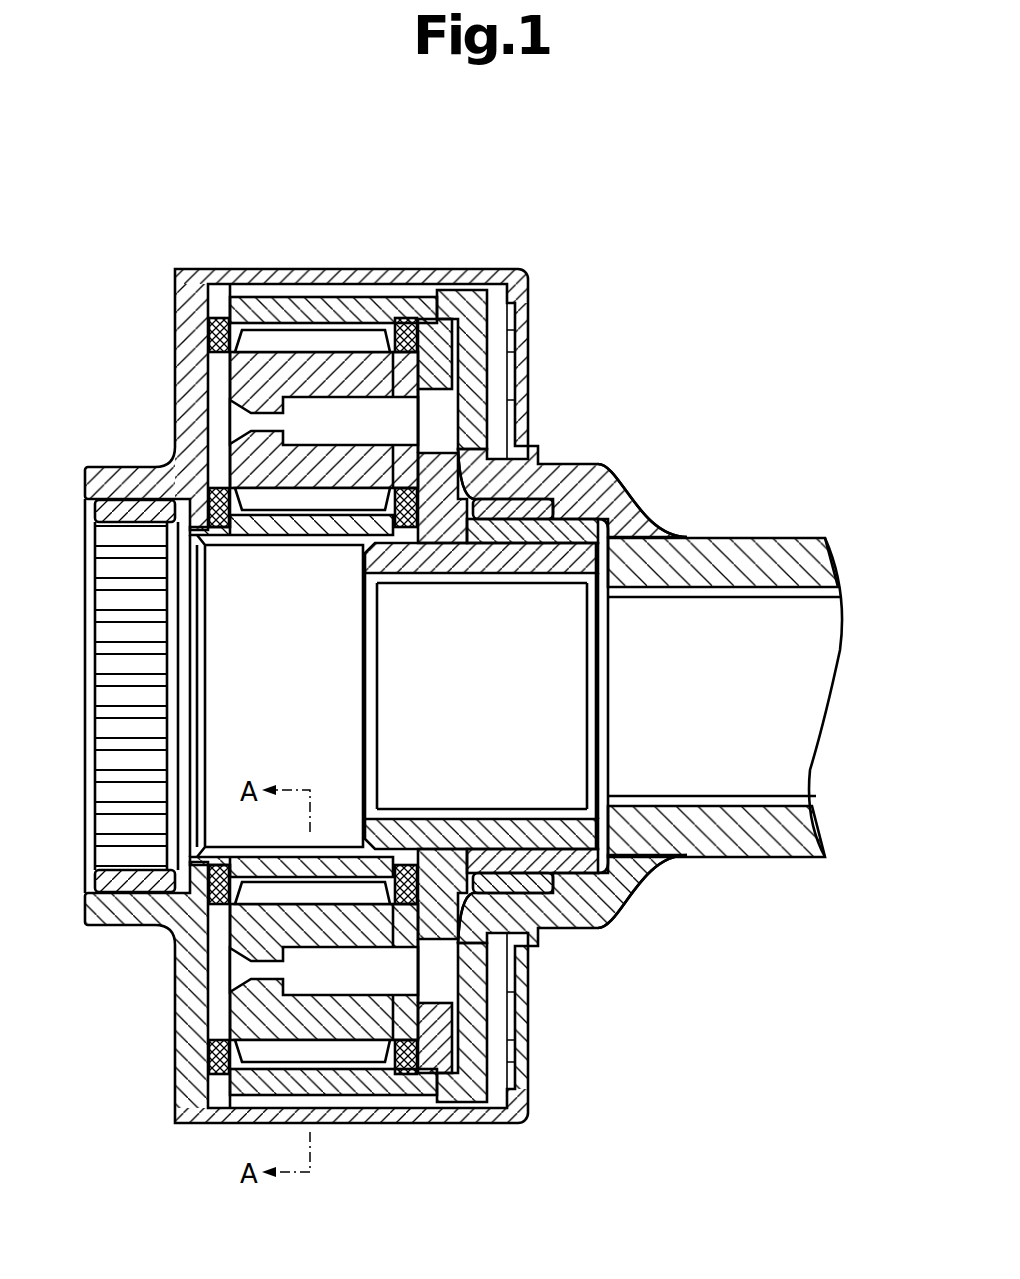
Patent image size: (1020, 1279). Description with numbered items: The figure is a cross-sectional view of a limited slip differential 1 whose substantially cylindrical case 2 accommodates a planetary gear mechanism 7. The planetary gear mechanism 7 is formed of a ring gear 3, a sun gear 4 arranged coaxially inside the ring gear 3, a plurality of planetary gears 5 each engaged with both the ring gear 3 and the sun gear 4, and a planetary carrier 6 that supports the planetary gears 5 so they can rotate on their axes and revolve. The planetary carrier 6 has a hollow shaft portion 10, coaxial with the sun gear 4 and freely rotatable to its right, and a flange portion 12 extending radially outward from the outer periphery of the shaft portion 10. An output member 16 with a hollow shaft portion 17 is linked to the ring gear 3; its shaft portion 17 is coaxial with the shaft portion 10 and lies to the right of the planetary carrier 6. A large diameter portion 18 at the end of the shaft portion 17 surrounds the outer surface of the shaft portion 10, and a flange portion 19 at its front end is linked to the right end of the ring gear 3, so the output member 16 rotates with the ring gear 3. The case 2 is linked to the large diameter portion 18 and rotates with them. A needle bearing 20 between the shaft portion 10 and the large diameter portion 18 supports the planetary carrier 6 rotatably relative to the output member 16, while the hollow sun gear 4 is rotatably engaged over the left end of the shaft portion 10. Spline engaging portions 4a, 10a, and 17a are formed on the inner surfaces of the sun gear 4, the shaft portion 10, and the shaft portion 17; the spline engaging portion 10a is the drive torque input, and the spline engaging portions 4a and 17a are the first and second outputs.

The limited slip differential 1 is at (800, 325).
The case 2 is at (467, 269).
The ring gear 3 is at (314, 297).
The sun gear 4 is at (187, 530).
The spline engaging portion 4a is at (270, 548).
The planetary gears 5 is at (225, 381).
The planetary carrier 6 is at (470, 455).
The planetary gear mechanism 7 is at (227, 303).
The shaft portion 10 is at (547, 562).
The spline engaging portion 10a is at (412, 583).
The flange portion 12 is at (442, 347).
The output member 16 is at (634, 492).
The shaft portion 17 is at (765, 548).
The spline engaging portion 17a is at (665, 597).
The large diameter portion 18 is at (583, 477).
The flange portion 19 is at (475, 375).
The needle bearing 20 is at (497, 521).